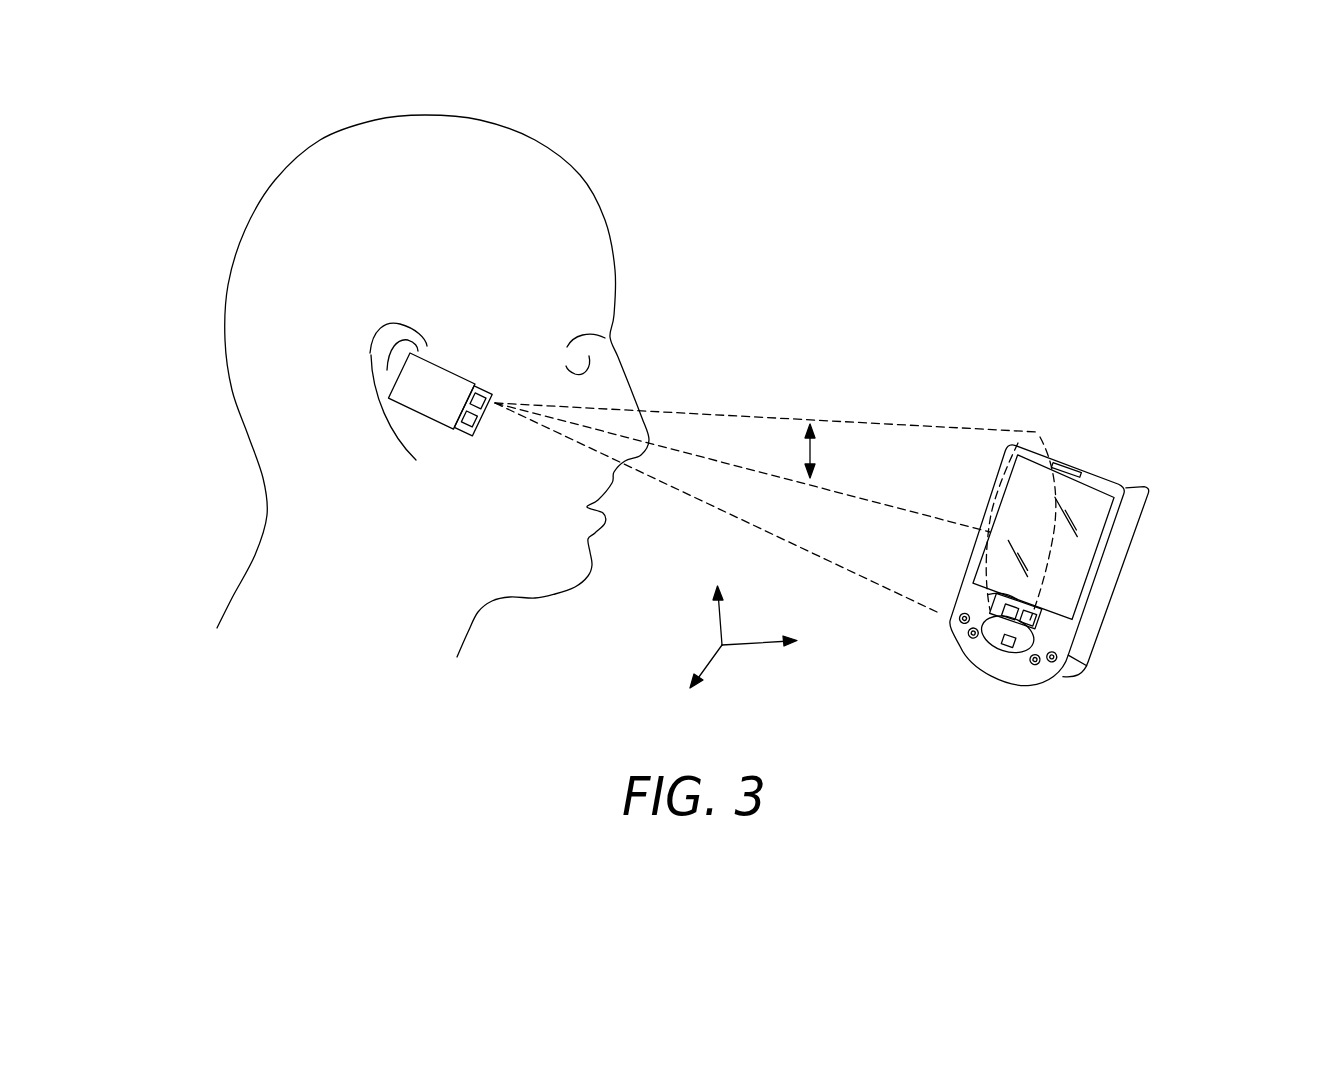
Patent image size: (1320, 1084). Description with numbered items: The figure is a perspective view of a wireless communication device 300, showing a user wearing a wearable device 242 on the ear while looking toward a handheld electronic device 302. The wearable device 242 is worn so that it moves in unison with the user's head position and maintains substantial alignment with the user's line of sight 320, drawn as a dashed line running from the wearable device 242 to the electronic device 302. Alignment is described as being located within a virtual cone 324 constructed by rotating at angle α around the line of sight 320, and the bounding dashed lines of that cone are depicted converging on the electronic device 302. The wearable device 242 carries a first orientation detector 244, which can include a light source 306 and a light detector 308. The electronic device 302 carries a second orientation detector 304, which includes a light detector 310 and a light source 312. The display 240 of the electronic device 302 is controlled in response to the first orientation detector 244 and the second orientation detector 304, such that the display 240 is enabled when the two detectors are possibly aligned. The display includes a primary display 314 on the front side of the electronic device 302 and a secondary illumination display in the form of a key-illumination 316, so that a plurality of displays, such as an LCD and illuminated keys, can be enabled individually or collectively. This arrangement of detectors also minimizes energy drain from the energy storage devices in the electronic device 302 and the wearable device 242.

The wireless communication device 300 is at (731, 421).
The wearable device 242 is at (431, 398).
The first orientation detector 244 is at (431, 398).
The light source 306 is at (486, 397).
The light detector 308 is at (450, 418).
The display 240 is at (1079, 554).
The primary display 314 is at (1109, 537).
The electronic device 302 is at (1108, 584).
The virtual cone 324 is at (1038, 432).
The line of sight 320 is at (890, 506).
The second orientation detector 304 is at (1055, 624).
The light source 312 is at (997, 606).
The light detector 310 is at (1000, 628).
The key-illumination 316 is at (975, 631).